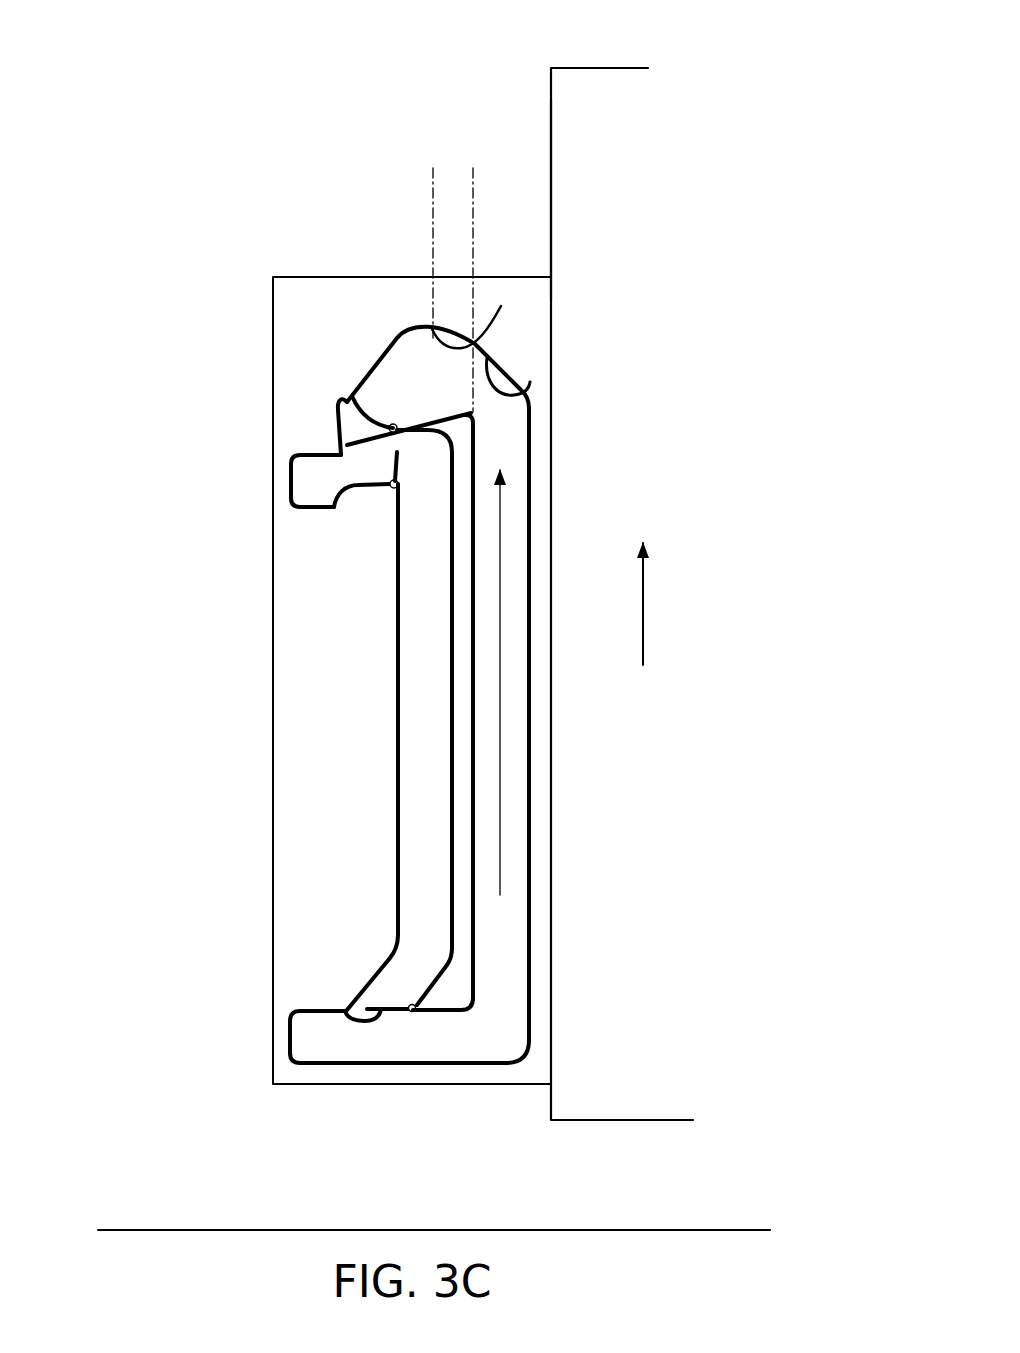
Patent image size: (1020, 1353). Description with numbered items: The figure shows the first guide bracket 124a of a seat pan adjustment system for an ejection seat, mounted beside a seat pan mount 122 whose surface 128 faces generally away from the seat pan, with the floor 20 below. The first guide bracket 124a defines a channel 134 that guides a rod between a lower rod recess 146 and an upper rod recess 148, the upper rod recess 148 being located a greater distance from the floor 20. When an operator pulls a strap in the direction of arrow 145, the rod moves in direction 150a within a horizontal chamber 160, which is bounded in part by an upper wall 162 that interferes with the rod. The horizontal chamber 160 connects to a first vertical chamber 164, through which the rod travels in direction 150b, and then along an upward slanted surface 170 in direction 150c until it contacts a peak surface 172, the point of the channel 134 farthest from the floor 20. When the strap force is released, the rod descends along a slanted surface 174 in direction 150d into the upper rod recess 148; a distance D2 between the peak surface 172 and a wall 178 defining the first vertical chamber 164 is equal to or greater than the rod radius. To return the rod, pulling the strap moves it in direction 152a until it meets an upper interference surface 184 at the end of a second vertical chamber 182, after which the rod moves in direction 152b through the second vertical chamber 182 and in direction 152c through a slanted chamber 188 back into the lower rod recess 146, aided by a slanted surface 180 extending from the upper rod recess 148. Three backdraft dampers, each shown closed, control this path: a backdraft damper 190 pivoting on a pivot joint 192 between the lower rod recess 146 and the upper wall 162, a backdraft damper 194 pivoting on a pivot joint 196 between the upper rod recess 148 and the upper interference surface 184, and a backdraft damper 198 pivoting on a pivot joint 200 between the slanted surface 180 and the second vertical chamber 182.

The floor 20 is at (138, 1230).
The seat pan mount 122 is at (602, 88).
The first guide bracket 124a is at (295, 313).
The surface 128 is at (551, 102).
The channel 134 is at (390, 343).
The arrow 145 is at (648, 621).
The lower rod recess 146 is at (290, 1053).
The upper rod recess 148 is at (312, 482).
The direction 150a is at (503, 1044).
The direction 150b is at (500, 698).
The direction 150c is at (452, 362).
The direction 150d is at (370, 410).
The direction 152a is at (421, 435).
The direction 152b is at (425, 925).
The direction 152c is at (370, 1003).
The horizontal chamber 160 is at (425, 1058).
The upper wall 162 is at (442, 1012).
The first vertical chamber 164 is at (520, 820).
The upward slanted surface 170 is at (530, 402).
The peak surface 172 is at (474, 314).
The slanted surface 174 is at (428, 418).
The wall 178 is at (475, 588).
The slanted surface 180 is at (333, 507).
The second vertical chamber 182 is at (400, 782).
The upper interference surface 184 is at (450, 458).
The slanted chamber 188 is at (380, 970).
The backdraft damper 190 is at (345, 1011).
The pivot joint 192 is at (414, 1005).
The backdraft damper 194 is at (337, 424).
The pivot joint 196 is at (348, 402).
The backdraft damper 198 is at (398, 472).
The pivot joint 200 is at (393, 487).
The distance D2 is at (382, 193).